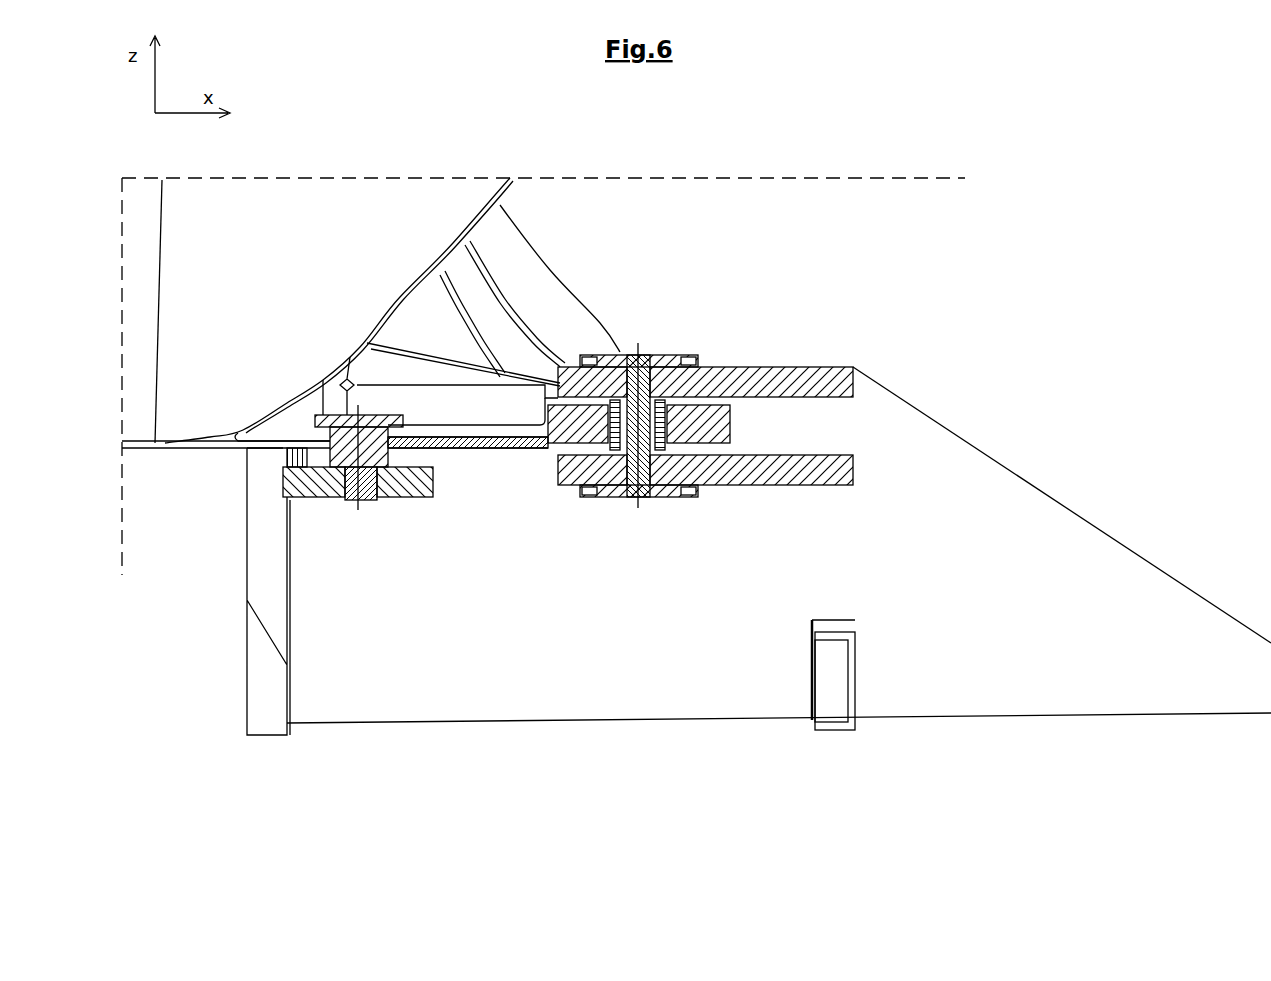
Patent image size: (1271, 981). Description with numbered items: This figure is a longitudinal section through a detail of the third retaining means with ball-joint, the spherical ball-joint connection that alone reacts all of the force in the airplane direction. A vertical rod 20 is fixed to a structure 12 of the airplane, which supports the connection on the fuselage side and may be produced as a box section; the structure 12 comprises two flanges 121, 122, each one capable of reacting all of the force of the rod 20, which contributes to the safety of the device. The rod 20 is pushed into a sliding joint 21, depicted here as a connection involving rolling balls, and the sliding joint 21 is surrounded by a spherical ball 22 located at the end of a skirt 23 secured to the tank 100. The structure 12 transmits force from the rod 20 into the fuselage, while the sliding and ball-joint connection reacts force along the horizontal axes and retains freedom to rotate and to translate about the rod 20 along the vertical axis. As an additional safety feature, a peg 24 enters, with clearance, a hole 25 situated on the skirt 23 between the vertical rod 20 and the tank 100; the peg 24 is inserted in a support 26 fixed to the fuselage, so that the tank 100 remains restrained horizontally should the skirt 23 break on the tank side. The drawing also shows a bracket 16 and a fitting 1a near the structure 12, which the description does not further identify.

The tank 100 is at (297, 228).
The flange 121 is at (848, 360).
The flange 122 is at (857, 485).
The structure 12 is at (1048, 647).
The support bracket 16 is at (265, 712).
The attachment fitting 1a is at (820, 695).
The vertical rod 20 is at (660, 497).
The sliding joint 21 is at (548, 413).
The spherical ball 22 is at (733, 438).
The skirt 23 is at (463, 450).
The peg 24 is at (358, 505).
The hole 25 is at (328, 497).
The support 26 is at (392, 500).